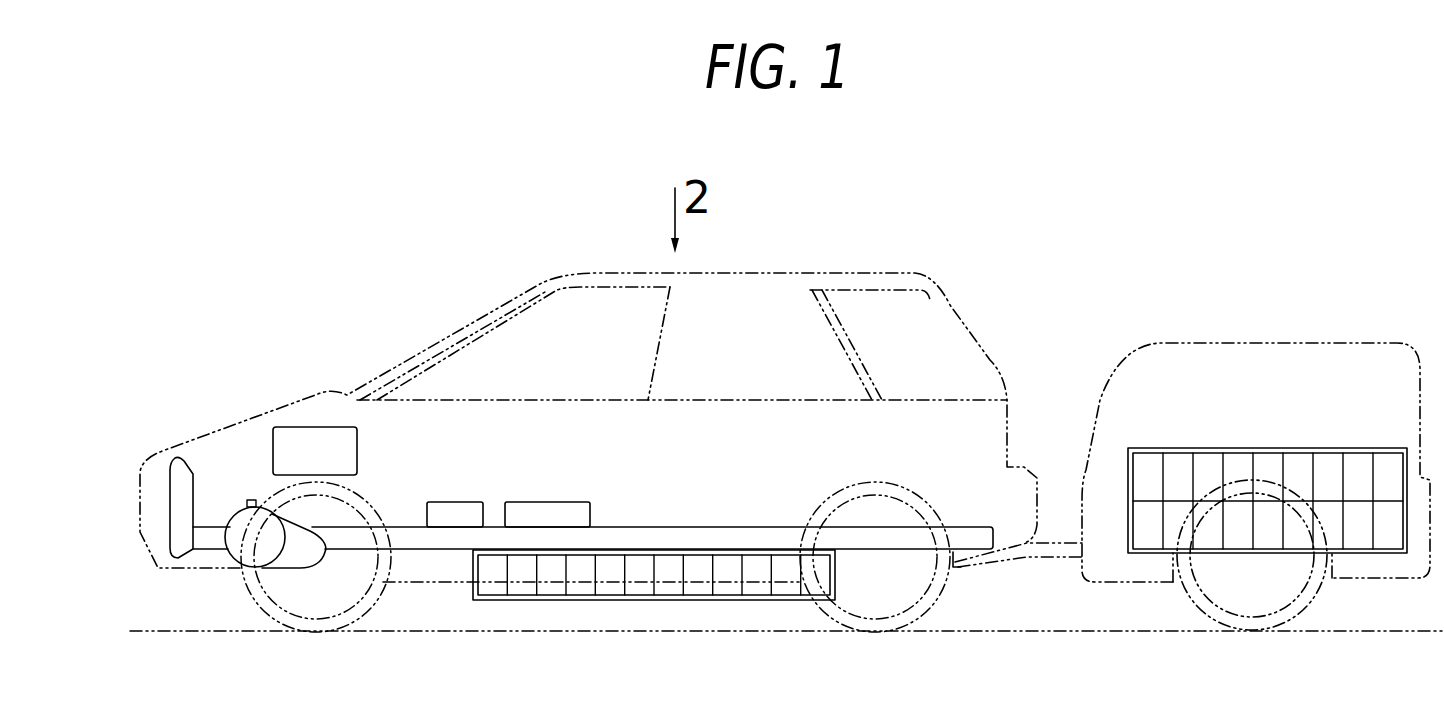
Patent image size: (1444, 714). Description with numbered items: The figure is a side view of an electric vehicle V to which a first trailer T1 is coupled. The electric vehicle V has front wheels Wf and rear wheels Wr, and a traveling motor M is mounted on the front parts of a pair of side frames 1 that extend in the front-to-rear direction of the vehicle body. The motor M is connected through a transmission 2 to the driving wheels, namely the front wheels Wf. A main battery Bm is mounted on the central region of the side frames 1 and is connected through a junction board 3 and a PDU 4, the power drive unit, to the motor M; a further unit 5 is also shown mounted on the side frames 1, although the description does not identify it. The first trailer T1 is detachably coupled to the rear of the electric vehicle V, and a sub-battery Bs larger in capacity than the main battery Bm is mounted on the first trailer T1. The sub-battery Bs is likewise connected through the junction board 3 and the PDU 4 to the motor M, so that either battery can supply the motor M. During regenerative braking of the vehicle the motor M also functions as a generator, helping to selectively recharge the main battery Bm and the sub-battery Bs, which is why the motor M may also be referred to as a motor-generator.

The side frames 1 is at (701, 533).
The transmission 2 is at (303, 557).
The junction board 3 is at (447, 506).
The PDU (power drive unit) 4 is at (312, 435).
The electrical unit 5 is at (545, 506).
The traveling motor M is at (245, 526).
The electric vehicle V is at (743, 263).
The front wheels Wf is at (312, 613).
The rear wheels Wr is at (893, 618).
The main battery Bm is at (703, 602).
The first trailer T1 is at (1222, 338).
The sub-battery Bs is at (1287, 440).